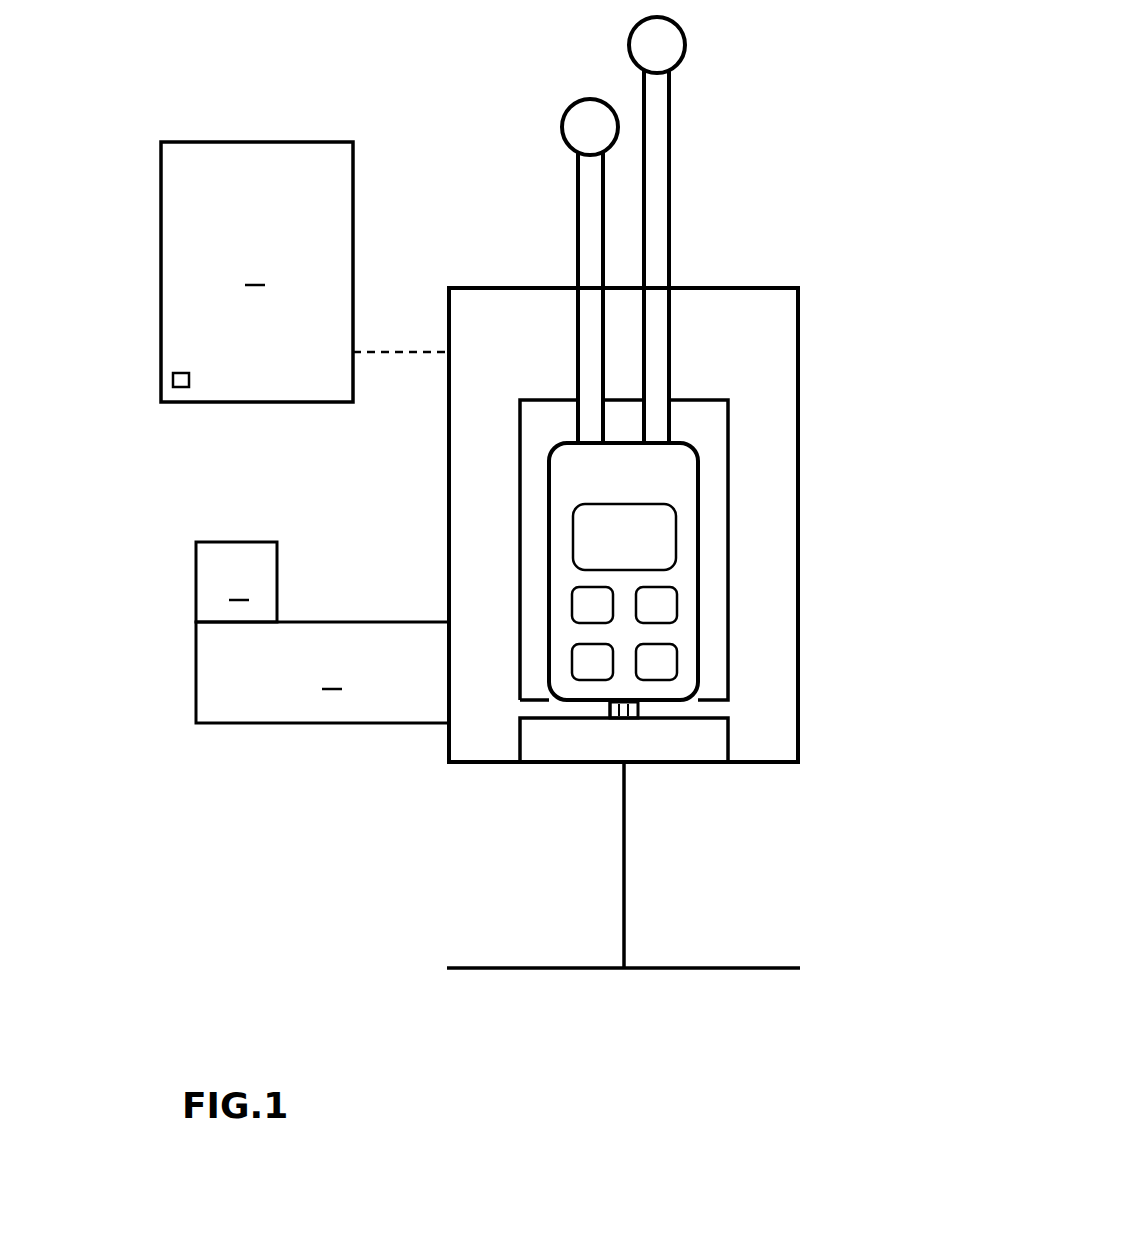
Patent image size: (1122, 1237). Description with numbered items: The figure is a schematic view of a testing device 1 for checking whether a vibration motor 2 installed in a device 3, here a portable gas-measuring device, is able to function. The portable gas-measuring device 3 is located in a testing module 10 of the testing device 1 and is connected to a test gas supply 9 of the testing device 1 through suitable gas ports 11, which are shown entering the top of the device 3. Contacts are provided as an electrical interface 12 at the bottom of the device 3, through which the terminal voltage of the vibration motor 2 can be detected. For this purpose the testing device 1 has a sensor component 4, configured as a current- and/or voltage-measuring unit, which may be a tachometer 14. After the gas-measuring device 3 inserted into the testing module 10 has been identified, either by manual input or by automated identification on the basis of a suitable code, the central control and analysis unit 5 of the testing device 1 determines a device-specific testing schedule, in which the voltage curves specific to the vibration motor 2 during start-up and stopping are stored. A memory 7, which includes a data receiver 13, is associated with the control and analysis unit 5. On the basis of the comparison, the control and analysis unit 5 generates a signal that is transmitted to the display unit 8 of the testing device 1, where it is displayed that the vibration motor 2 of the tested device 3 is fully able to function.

The testing device 1 is at (727, 739).
The vibration motor 2 is at (663, 599).
The portable gas-measuring device 3 is at (657, 571).
The sensor component 4 is at (623, 722).
The central control and analysis unit 5 is at (322, 672).
The memory 7 is at (236, 582).
The display unit 8 is at (257, 272).
The test gas supply 9 is at (669, 108).
The testing module 10 is at (799, 352).
The gas ports 11 is at (658, 436).
The electrical interface 12 is at (638, 711).
The data receiver 13 is at (176, 375).
The tachometer 14 is at (608, 707).